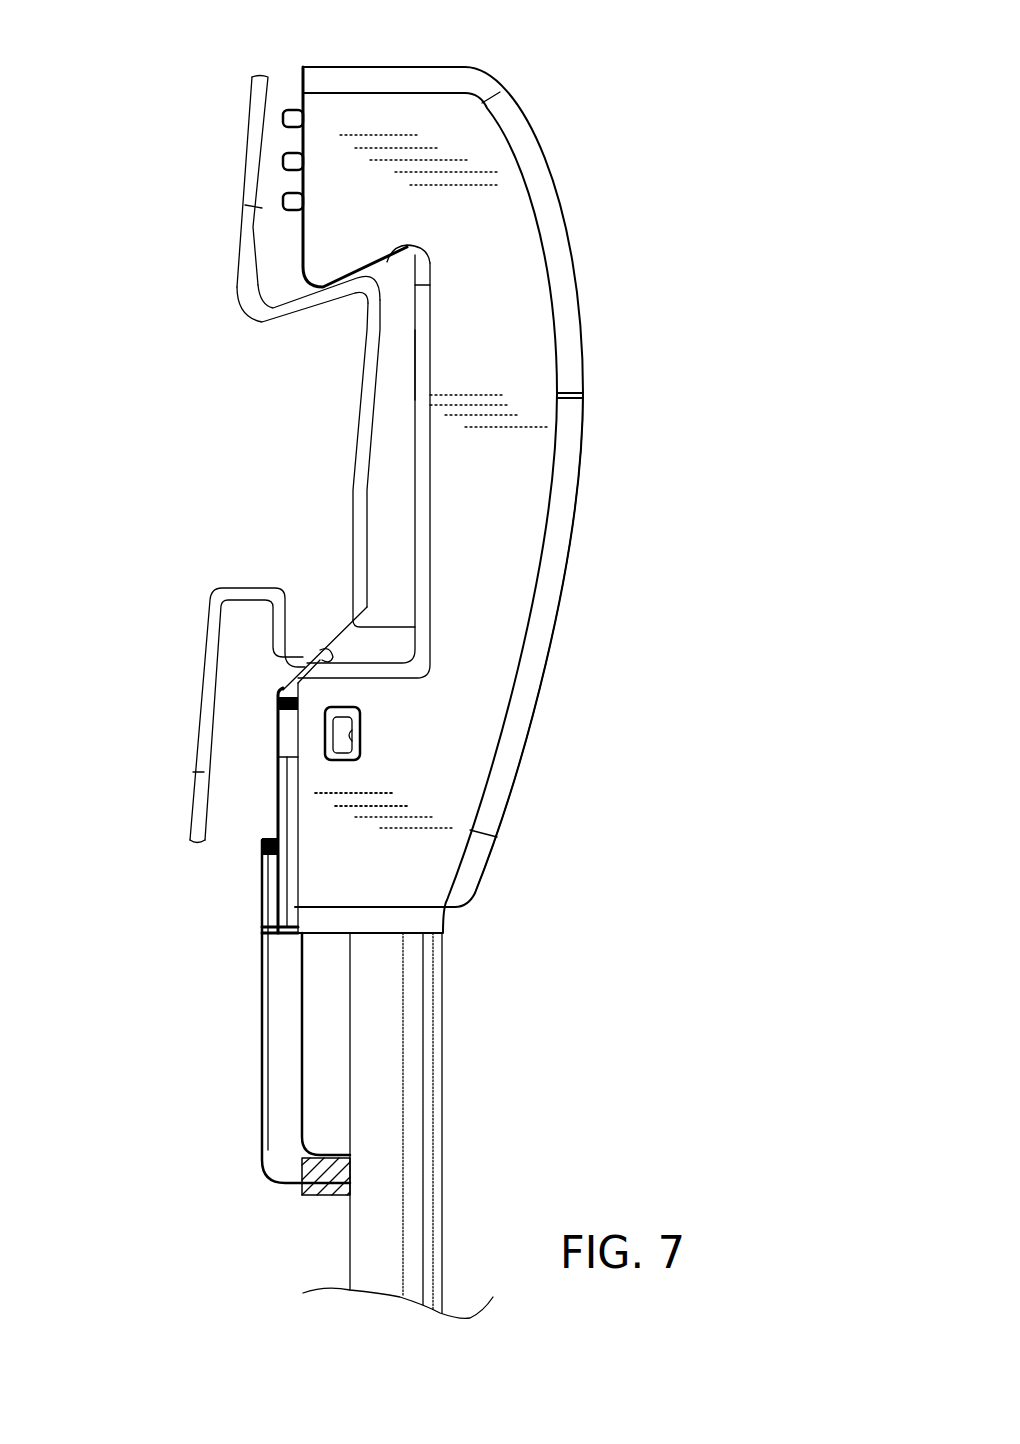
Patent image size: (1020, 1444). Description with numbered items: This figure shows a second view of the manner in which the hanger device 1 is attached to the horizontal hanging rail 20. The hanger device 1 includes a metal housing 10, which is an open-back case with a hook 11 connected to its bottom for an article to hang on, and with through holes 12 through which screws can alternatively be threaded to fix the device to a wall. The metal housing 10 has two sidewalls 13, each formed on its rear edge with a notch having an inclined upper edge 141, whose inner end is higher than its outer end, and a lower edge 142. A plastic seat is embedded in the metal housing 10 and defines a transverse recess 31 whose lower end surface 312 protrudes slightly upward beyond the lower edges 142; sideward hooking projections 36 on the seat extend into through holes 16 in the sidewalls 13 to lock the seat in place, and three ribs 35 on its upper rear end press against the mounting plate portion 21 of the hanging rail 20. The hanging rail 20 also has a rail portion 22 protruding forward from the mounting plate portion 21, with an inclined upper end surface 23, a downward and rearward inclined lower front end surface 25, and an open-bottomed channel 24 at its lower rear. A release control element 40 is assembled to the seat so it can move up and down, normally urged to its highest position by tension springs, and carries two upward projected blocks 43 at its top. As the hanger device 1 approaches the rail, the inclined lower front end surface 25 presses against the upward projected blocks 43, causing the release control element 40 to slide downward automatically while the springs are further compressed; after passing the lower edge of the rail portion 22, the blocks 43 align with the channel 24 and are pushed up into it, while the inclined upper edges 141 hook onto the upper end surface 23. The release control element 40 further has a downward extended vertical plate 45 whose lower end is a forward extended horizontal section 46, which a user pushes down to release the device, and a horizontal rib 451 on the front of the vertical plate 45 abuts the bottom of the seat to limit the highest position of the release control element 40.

The hanger device 1 is at (587, 167).
The metal housing 10 is at (542, 203).
The hook 11 is at (430, 1117).
The through holes 12 is at (418, 400).
The sidewalls 13 is at (513, 453).
The inclined upper edge 141 is at (383, 262).
The lower edges 142 is at (370, 675).
The through holes 16 is at (345, 740).
The horizontal hanging rail 20 is at (307, 345).
The mounting plate portion 21 is at (243, 232).
The rail portion 22 is at (367, 482).
The upper end surface 23 is at (300, 310).
The open-bottomed channel 24 is at (240, 630).
The inclined lower front end surface 25 is at (427, 620).
The transverse recess 31 is at (420, 510).
The lower end surface 312 is at (335, 645).
The ribs 35 is at (300, 113).
The hooking projections 36 is at (342, 760).
The release control element 40 is at (283, 887).
The upward projected blocks 43 is at (327, 655).
The vertical plate 45 is at (287, 1087).
The horizontal rib 451 is at (302, 967).
The horizontal section 46 is at (330, 1180).